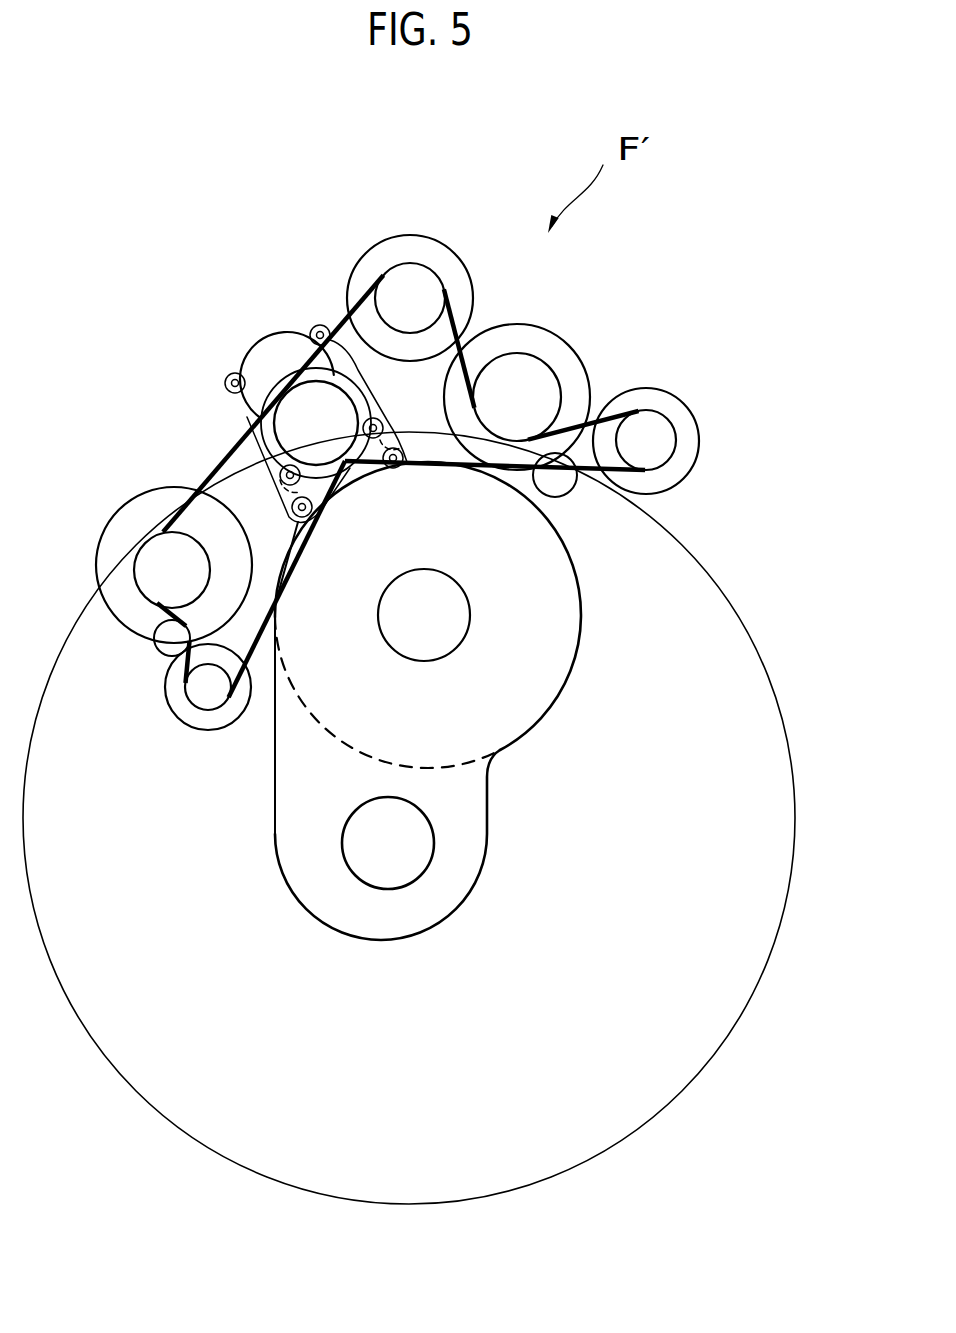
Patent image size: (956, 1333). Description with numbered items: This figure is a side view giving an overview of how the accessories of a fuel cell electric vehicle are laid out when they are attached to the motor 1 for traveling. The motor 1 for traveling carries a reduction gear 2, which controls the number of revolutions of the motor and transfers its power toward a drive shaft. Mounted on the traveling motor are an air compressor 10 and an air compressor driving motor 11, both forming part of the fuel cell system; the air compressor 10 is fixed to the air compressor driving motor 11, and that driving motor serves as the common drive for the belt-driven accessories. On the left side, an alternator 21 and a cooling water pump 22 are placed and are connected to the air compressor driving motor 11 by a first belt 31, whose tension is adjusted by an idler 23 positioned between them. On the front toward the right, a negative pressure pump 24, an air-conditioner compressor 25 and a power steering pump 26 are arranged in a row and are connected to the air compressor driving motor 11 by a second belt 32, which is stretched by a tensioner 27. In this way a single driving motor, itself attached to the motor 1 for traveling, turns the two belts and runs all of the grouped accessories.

The motor for traveling 1 is at (515, 710).
The reduction gear 2 is at (467, 847).
The air compressor 10 is at (280, 357).
The air compressor driving motor 11 is at (305, 425).
The alternator 21 is at (123, 613).
The cooling water pump 22 is at (207, 720).
The idler 23 is at (162, 650).
The negative pressure pump 24 is at (460, 285).
The air-conditioner compressor 25 is at (556, 355).
The power steering pump 26 is at (692, 437).
The tensioner 27 is at (563, 487).
The first belt 31 is at (227, 460).
The second belt 32 is at (600, 412).